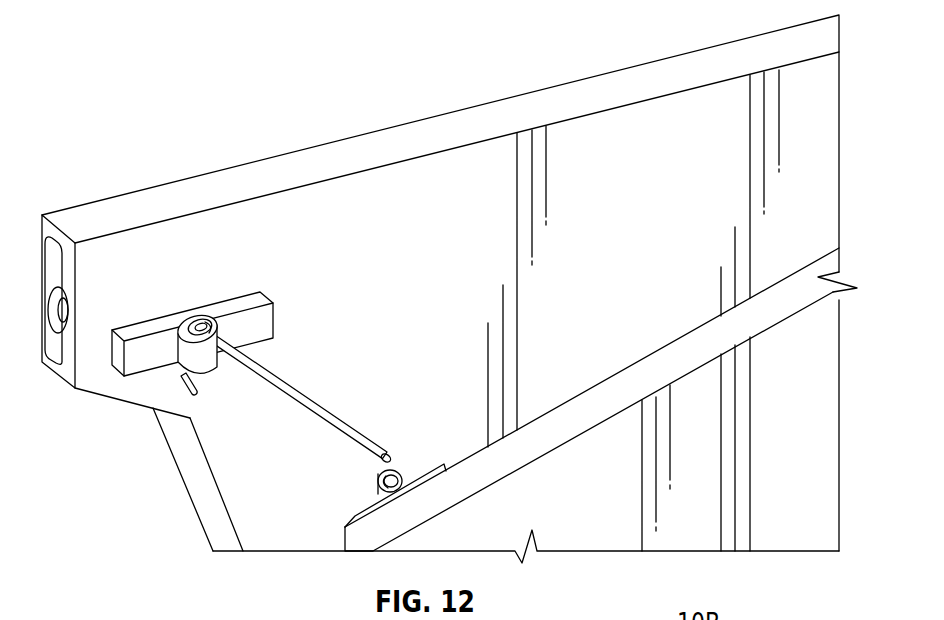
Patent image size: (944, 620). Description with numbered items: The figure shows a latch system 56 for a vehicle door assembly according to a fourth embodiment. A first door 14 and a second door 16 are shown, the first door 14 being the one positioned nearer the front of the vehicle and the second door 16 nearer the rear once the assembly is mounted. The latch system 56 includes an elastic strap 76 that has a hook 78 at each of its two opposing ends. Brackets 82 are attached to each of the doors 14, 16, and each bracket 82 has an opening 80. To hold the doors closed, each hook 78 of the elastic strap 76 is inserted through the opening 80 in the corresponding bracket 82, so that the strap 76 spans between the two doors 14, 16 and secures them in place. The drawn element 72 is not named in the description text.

The first door 14 is at (691, 408).
The second door 16 is at (598, 152).
The latch system 56 is at (376, 389).
The bar 72 is at (276, 317).
The elastic strap 76 is at (343, 436).
The hook 78 is at (188, 318).
The opening 80 is at (181, 318).
The bracket 82 is at (243, 302).